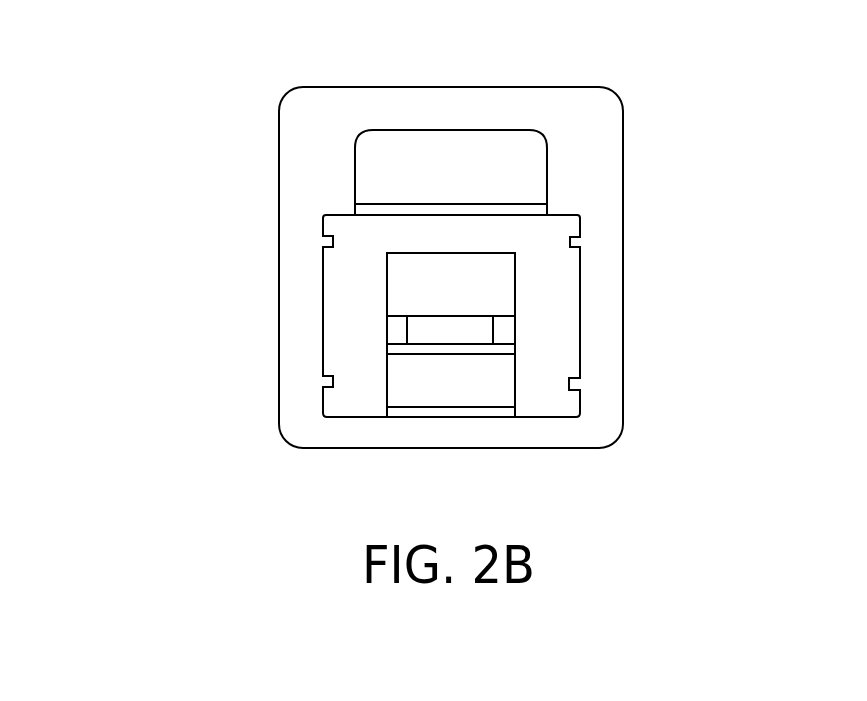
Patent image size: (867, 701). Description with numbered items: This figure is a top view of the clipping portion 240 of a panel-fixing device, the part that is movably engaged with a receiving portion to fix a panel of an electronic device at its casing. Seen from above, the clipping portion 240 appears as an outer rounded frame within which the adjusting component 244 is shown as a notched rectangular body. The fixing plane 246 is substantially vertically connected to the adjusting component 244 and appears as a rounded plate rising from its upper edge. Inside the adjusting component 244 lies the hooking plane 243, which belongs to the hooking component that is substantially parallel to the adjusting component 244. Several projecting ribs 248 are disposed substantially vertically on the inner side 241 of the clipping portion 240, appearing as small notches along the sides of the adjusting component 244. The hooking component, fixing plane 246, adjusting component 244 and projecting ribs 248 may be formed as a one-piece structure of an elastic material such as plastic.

The clipping portion 240 is at (88, 32).
The inner side 241 is at (577, 313).
The hooking plane 243 is at (509, 296).
The adjusting component 244 is at (547, 212).
The fixing plane 246 is at (547, 150).
The projecting ribs 248 is at (573, 385).